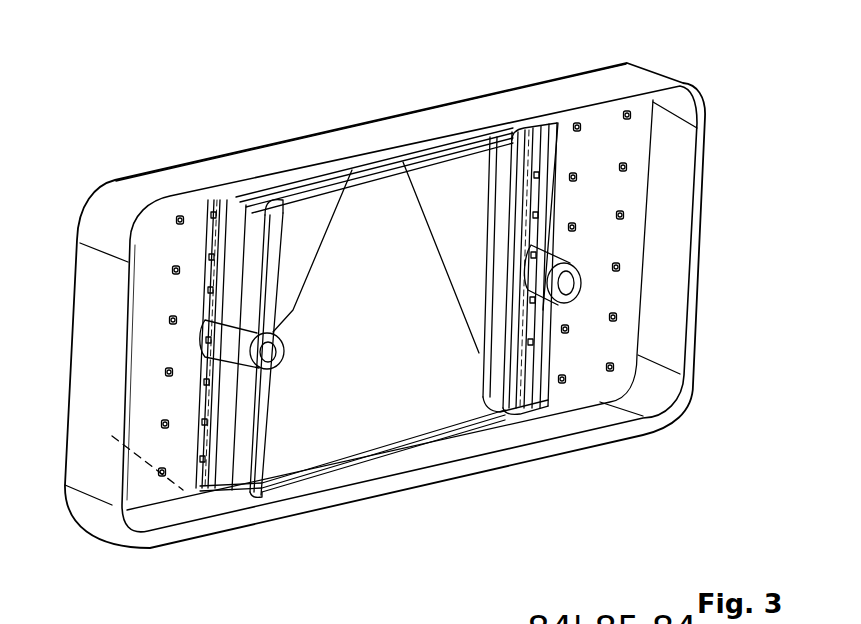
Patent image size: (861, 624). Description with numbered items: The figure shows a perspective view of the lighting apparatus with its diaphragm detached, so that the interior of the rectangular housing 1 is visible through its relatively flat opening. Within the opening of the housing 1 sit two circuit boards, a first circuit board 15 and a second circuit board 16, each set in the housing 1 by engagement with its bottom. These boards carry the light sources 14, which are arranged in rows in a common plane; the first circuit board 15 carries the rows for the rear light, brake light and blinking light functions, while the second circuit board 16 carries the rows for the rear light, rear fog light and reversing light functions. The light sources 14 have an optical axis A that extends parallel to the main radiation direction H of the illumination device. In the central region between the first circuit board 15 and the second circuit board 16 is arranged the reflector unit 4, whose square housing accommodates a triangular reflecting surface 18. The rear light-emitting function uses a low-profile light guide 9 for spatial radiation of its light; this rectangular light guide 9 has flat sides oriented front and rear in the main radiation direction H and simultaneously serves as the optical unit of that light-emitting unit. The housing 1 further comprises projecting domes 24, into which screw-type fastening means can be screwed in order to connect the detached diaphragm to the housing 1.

The housing 1 is at (673, 404).
The reflector unit 4 is at (326, 118).
The low-profile light guide 9 is at (440, 425).
The light sources 14 is at (173, 266).
The first circuit board 15 is at (152, 485).
The second circuit board 16 is at (627, 188).
The triangular reflecting surface 18 is at (423, 203).
The projecting domes 24 is at (213, 336).
The optical axis A is at (178, 487).
The main radiation direction H is at (245, 552).